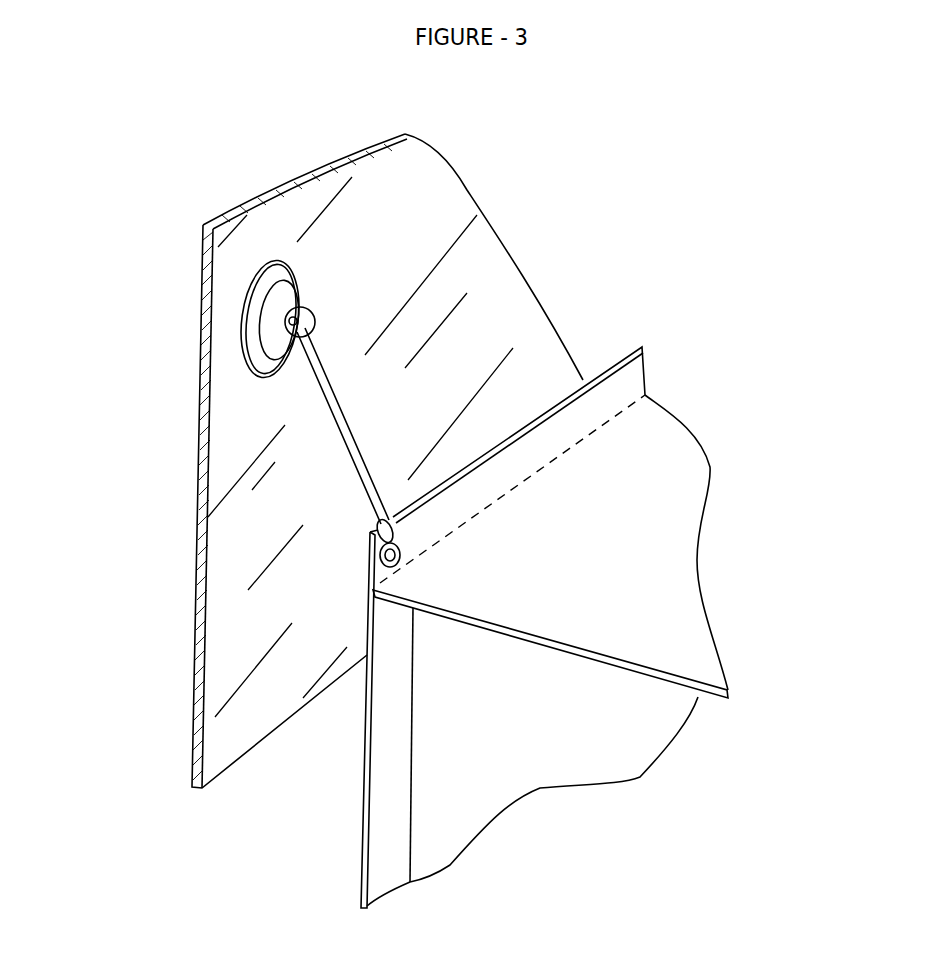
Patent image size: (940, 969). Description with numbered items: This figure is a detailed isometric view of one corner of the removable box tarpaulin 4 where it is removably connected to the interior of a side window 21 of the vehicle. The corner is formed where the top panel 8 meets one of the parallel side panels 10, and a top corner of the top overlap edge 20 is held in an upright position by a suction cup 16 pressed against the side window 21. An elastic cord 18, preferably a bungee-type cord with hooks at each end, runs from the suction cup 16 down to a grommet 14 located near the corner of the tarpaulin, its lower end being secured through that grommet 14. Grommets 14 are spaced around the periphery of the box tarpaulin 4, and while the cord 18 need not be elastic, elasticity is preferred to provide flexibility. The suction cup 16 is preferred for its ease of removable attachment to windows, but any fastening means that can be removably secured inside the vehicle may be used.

The removable box tarpaulin 4 is at (489, 582).
The top panel 8 is at (673, 507).
The side panel 10 is at (465, 775).
The grommet 14 is at (398, 543).
The suction cup 16 is at (255, 333).
The elastic cord 18 is at (355, 440).
The top overlap edge 20 is at (632, 377).
The side window 21 is at (508, 277).